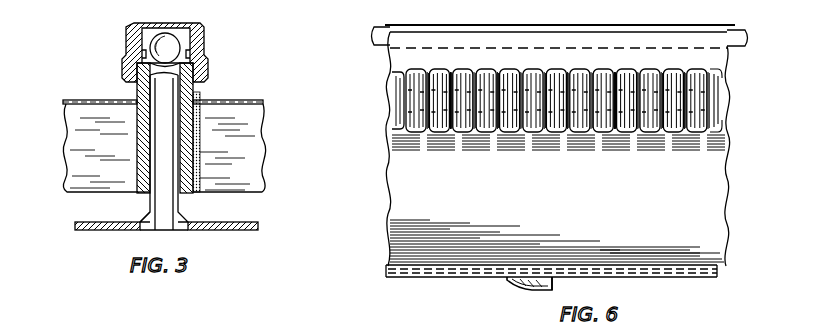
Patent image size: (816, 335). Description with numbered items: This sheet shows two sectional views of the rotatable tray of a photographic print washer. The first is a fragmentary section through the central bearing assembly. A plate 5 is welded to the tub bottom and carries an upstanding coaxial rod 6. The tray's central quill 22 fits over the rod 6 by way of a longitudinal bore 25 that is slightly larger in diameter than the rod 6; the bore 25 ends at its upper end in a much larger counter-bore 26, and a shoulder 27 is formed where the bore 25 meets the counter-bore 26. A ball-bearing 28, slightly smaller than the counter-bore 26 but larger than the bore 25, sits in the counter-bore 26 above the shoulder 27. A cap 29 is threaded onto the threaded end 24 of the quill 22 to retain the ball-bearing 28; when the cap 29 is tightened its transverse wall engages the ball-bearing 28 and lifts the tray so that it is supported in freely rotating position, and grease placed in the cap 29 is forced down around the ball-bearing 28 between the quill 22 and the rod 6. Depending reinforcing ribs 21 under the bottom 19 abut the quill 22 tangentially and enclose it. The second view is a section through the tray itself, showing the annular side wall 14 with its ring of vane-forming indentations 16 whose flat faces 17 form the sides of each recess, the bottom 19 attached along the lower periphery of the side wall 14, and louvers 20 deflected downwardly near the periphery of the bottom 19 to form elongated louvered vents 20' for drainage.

In FIG. 3, the plate 5 is at (240, 232).
In FIG. 6, the plate 5 is at (738, 33).
In FIG. 3, the rod 6 is at (180, 200).
In FIG. 6, the side wall 14 is at (650, 230).
In FIG. 6, the vane-forming indentations 16 is at (438, 133).
In FIG. 6, the flat faces 17 is at (450, 134).
In FIG. 3, the bottom 19 is at (80, 98).
In FIG. 6, the bottom 19 is at (690, 268).
In FIG. 6, the louvers 20 is at (512, 290).
In FIG. 6, the louvered vents 20' is at (583, 290).
In FIG. 3, the reinforcing ribs 21 is at (263, 153).
In FIG. 3, the quill 22 is at (140, 193).
In FIG. 3, the threaded end 24 is at (192, 92).
In FIG. 3, the bore 25 is at (149, 197).
In FIG. 3, the counter-bore 26 is at (200, 33).
In FIG. 3, the shoulder 27 is at (143, 53).
In FIG. 3, the ball-bearing 28 is at (175, 34).
In FIG. 3, the cap 29 is at (204, 65).